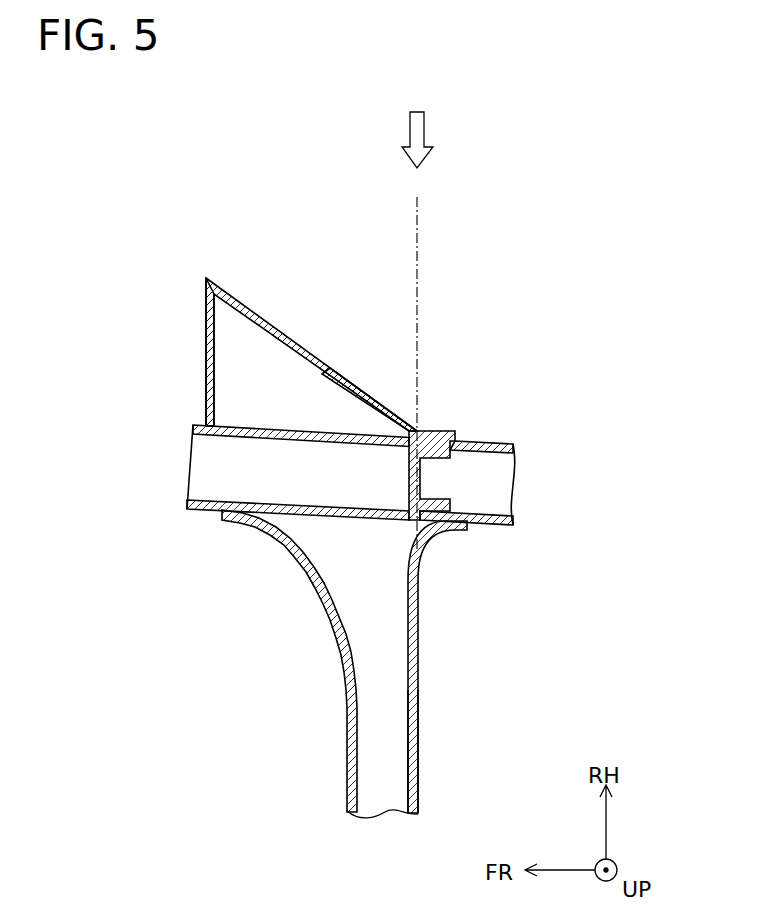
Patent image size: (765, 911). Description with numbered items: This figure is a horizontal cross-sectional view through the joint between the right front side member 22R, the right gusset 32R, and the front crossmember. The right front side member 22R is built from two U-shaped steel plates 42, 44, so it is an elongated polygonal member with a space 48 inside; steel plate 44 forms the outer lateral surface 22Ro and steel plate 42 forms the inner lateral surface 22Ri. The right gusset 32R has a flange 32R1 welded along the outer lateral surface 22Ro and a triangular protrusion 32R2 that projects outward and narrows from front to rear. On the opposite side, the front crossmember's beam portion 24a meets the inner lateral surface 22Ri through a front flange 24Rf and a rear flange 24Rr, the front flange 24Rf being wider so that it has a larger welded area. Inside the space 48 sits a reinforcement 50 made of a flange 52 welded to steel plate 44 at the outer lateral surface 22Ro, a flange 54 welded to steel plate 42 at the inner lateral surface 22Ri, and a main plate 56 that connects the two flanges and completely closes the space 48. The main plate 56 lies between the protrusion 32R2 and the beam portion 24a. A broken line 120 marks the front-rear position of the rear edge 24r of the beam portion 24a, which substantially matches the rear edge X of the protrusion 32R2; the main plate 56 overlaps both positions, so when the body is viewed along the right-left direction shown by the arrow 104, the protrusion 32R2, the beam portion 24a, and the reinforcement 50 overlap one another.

The arrow 104 is at (424, 128).
The broken line 120 is at (417, 215).
The right gusset 32R is at (344, 331).
The flange 32R1 is at (402, 353).
The protrusion 32R2 is at (297, 350).
The rear edge X is at (415, 420).
The right front side member 22R is at (236, 448).
The outer lateral surface 22Ro is at (247, 423).
The inner lateral surface 22Ri is at (229, 661).
The steel plate 44 is at (193, 430).
The space 48 is at (212, 455).
The steel plate 42 is at (188, 503).
The front flange 24Rf is at (248, 527).
The rear flange 24Rr is at (450, 535).
The rear edge 24r is at (418, 697).
The beam portion 24a is at (418, 755).
The flange 52 is at (440, 431).
The flange 54 is at (496, 667).
The main plate 56 is at (497, 442).
The reinforcement 50 is at (458, 482).